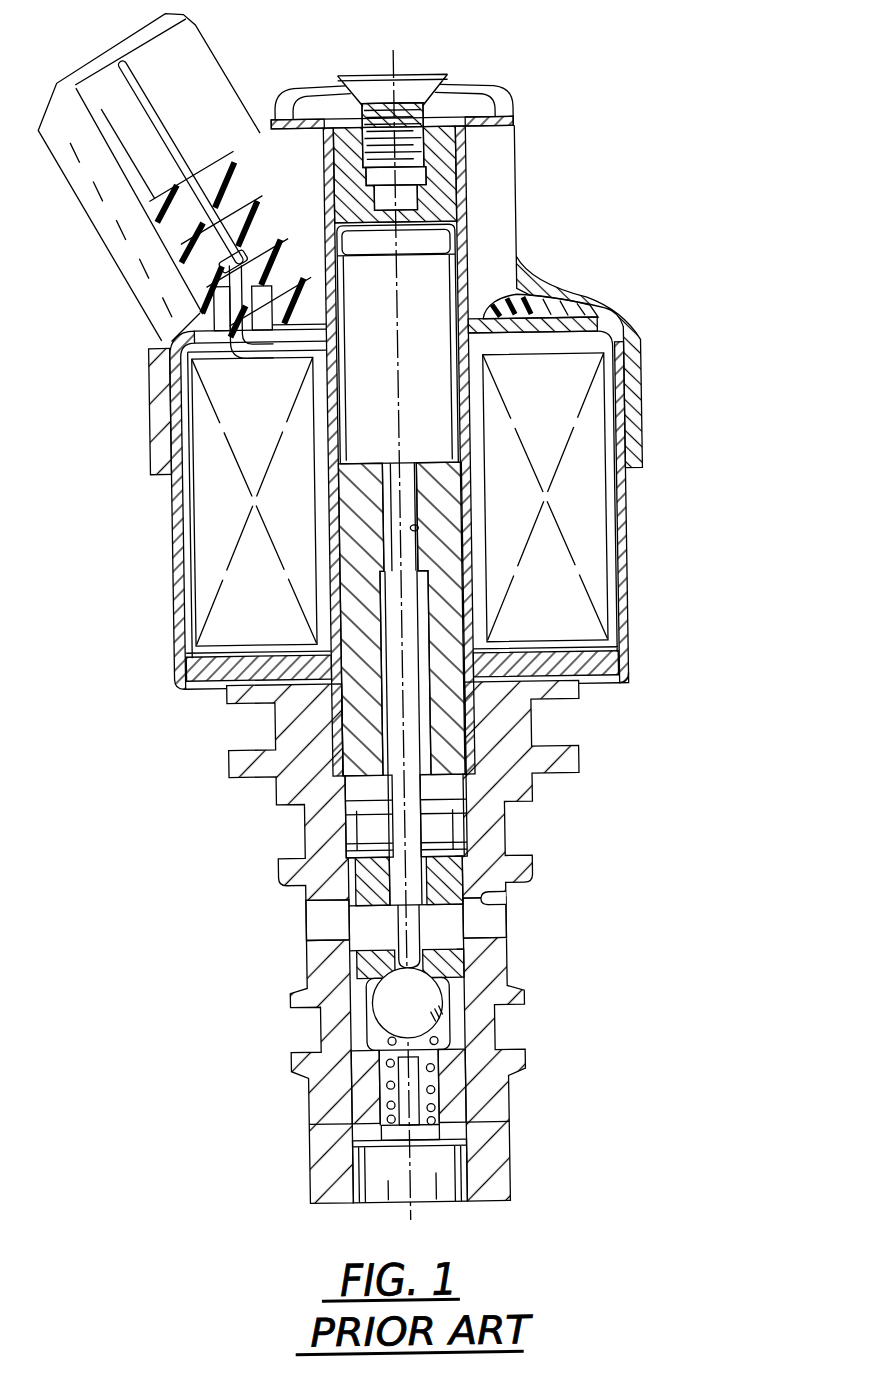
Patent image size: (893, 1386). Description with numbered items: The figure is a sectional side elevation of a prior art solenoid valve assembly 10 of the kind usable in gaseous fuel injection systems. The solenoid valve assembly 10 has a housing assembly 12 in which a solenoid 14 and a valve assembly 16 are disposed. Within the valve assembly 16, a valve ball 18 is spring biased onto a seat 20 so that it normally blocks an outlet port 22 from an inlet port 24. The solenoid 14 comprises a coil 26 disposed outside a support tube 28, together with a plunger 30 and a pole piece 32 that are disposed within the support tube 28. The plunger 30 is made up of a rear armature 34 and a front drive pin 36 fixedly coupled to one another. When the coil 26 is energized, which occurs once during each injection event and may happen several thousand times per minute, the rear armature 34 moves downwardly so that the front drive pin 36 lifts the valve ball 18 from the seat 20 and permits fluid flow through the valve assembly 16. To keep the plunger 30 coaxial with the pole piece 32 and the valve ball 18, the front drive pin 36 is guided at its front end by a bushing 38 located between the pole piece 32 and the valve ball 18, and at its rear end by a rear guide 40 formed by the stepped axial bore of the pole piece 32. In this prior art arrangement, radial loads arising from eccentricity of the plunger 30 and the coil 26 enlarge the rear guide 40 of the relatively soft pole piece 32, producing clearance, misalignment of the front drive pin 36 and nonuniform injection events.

The solenoid valve assembly 10 is at (672, 291).
The housing assembly 12 is at (631, 593).
The solenoid 14 is at (191, 587).
The valve assembly 16 is at (347, 1016).
The valve ball 18 is at (434, 1017).
The seat 20 is at (423, 968).
The outlet port 22 is at (498, 909).
The inlet port 24 is at (463, 1121).
The coil 26 is at (615, 411).
The support tube 28 is at (466, 253).
The plunger 30 is at (463, 419).
The pole piece 32 is at (456, 721).
The rear armature 34 is at (364, 388).
The front drive pin 36 is at (357, 826).
The bushing 38 is at (364, 869).
The rear guide 40 is at (420, 528).